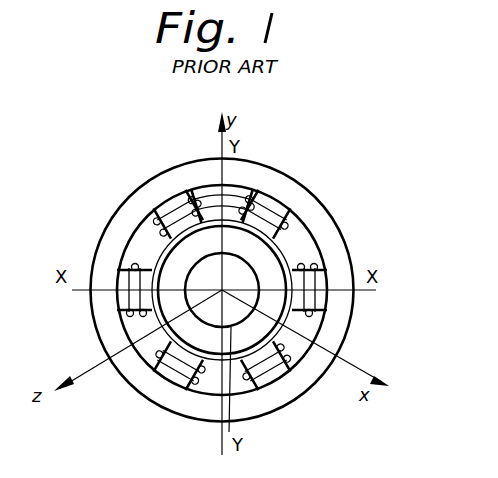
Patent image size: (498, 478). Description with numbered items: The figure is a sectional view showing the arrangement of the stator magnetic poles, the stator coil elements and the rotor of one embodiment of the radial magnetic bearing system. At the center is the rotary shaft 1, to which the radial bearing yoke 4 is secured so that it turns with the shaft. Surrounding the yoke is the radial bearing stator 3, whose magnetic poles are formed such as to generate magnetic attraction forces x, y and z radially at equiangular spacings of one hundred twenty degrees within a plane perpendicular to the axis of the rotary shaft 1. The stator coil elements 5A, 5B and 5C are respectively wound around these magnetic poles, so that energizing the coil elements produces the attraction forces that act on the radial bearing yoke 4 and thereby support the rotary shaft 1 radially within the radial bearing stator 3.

The rotary shaft 1 is at (240, 358).
The radial bearing stator 3 is at (275, 182).
The radial bearing yoke 4 is at (265, 263).
The stator coil element 5A is at (205, 182).
The stator coil element 5B is at (163, 358).
The stator coil element 5C is at (303, 327).